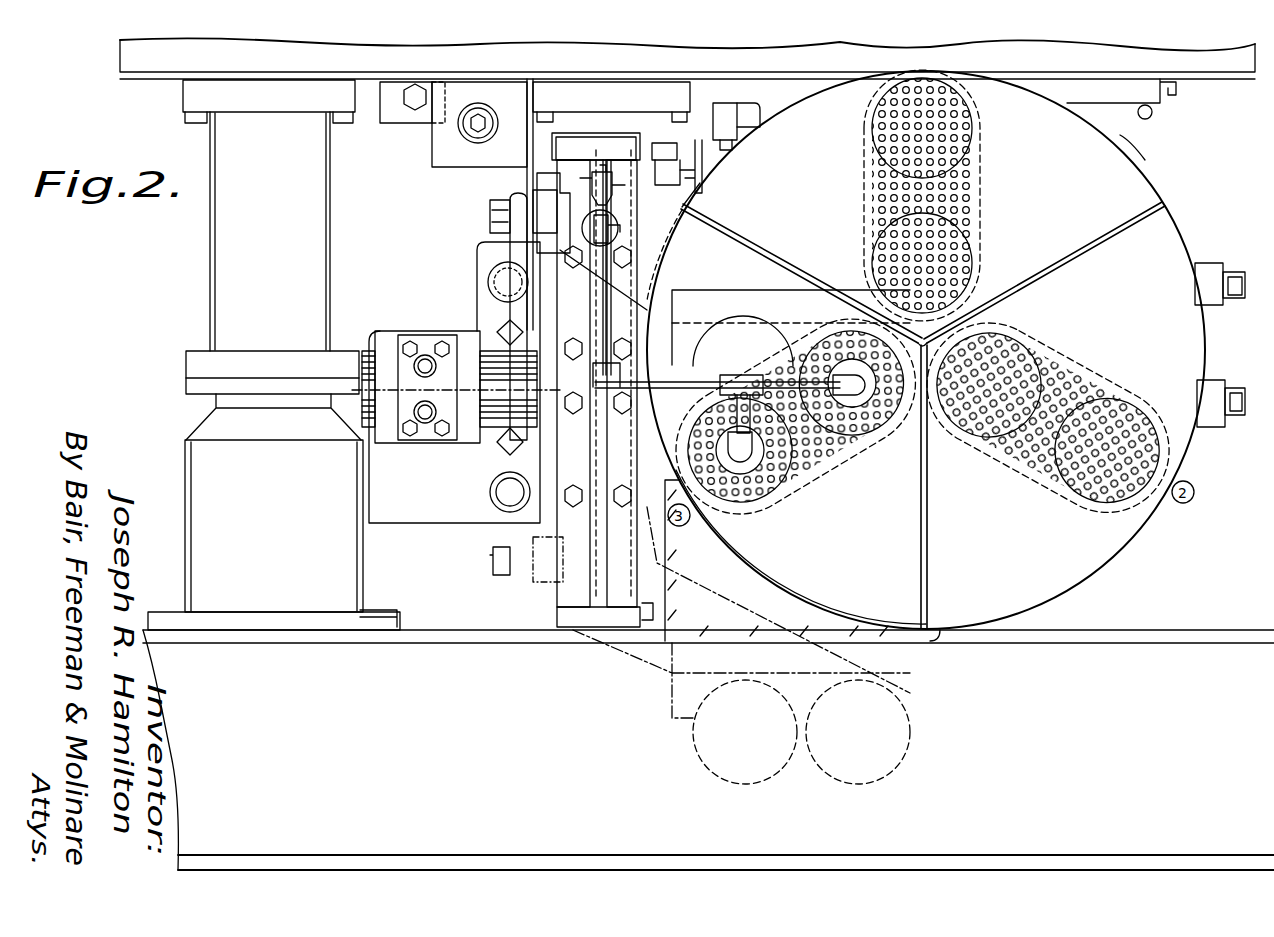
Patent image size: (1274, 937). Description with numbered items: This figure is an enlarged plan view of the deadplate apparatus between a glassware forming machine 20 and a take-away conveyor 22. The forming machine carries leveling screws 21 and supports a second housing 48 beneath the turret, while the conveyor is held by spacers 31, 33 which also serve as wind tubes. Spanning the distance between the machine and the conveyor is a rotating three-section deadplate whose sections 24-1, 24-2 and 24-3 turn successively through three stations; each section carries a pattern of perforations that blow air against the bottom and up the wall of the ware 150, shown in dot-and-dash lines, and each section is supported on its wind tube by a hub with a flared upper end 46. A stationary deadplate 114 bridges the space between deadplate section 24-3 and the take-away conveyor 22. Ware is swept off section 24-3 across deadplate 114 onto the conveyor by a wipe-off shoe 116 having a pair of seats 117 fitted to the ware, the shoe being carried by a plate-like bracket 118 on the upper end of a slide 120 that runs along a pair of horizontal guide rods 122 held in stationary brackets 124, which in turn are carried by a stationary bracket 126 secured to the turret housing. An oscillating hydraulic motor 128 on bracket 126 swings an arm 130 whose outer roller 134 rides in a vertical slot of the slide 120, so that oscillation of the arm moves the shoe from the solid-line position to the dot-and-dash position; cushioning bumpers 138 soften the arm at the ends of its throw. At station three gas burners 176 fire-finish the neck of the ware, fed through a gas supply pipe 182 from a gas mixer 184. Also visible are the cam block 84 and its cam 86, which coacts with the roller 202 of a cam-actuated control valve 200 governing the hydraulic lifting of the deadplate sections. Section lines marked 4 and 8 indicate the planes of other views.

The glassware forming machine 20 is at (595, 62).
The leveling screws 21 is at (468, 123).
The take-away conveyor 22 is at (545, 734).
The deadplate section 24-1 is at (1072, 171).
The deadplate section 24-2 is at (1022, 531).
The deadplate section 24-3 is at (853, 521).
The spacer 31 is at (222, 228).
The spacer 33 is at (196, 486).
The flared upper end of hub 46 is at (976, 205).
The second housing 48 is at (1132, 141).
The cam block 84 is at (722, 150).
The cam 86 is at (700, 188).
The stationary deadplate 114 is at (740, 568).
The wipe-off shoe 116 is at (703, 308).
The seats 117 is at (770, 350).
The plate-like bracket 118 is at (693, 245).
The slide 120 is at (563, 183).
The horizontal guide rods 122 is at (595, 583).
The stationary brackets 124 is at (587, 140).
The stationary bracket 126 is at (553, 466).
The oscillating hydraulic motor 128 is at (467, 330).
The arm 130 is at (500, 310).
The roller 134 is at (540, 190).
The cushioning bumpers 138 is at (496, 272).
The ware 150 is at (812, 470).
The gas burners 176 is at (755, 500).
The gas supply pipe 182 is at (750, 380).
The gas mixer 184 is at (600, 205).
The cam-actuated control valve 200 is at (672, 154).
The roller 202 is at (676, 172).
The section line 4- 4 is at (363, 408).
The section line 8- 8 is at (925, 675).